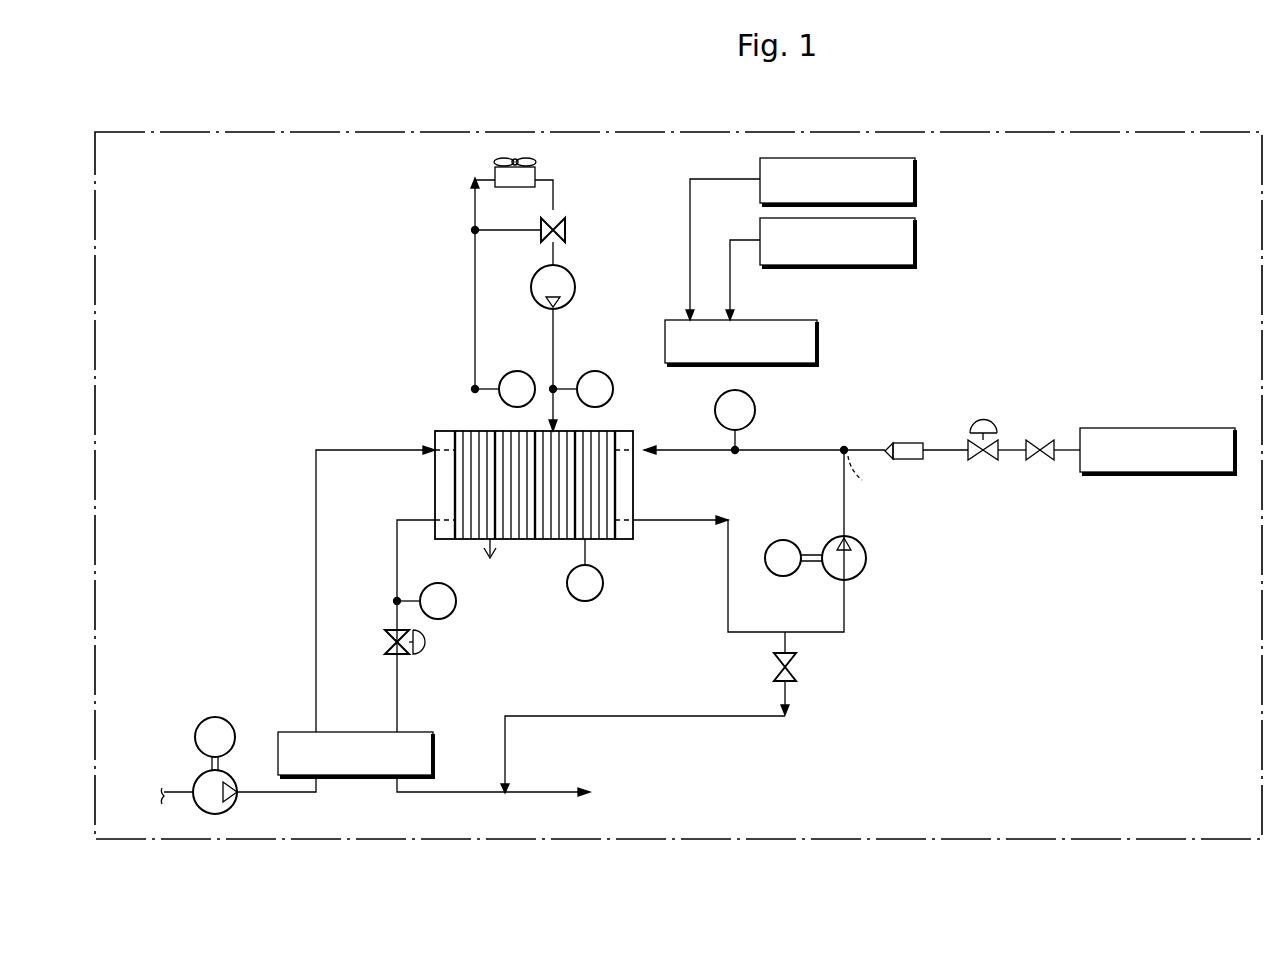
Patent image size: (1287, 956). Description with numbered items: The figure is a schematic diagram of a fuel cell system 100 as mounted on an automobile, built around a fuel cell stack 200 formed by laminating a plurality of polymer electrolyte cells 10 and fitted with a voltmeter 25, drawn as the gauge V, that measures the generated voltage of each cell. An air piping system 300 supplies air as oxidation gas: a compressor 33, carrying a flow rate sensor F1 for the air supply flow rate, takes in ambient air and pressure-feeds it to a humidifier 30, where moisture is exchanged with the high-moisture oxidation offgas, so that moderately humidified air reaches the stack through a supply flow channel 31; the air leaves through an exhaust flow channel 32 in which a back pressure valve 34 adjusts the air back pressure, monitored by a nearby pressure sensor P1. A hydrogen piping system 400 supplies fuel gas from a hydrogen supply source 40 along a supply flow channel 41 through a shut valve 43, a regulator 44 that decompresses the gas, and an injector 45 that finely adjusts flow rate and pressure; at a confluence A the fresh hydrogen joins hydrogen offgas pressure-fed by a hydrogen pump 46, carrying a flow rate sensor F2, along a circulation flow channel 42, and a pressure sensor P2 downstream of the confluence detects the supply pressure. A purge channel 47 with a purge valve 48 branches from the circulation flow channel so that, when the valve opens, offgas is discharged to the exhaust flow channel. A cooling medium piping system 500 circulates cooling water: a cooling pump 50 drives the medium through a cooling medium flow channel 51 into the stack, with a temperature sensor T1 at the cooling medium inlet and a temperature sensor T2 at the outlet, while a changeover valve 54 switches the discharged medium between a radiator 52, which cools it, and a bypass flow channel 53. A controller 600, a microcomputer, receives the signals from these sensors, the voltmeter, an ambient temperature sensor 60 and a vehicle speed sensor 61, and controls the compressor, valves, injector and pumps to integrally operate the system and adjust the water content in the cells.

The fuel cell system 100 is at (631, 131).
The polymer electrolyte cell 10 is at (490, 562).
The fuel cell stack 200 is at (551, 548).
The voltmeter 25 is at (600, 600).
The air piping system 300 is at (288, 638).
The humidifier 30 is at (436, 758).
The supply flow channel 31 is at (377, 449).
The exhaust flow channel 32 is at (398, 552).
The compressor 33 is at (230, 810).
The back pressure valve 34 is at (428, 652).
The hydrogen piping system 400 is at (930, 418).
The hydrogen supply source 40 is at (1150, 426).
The supply flow channel 41 is at (791, 449).
The circulation flow channel 42 is at (726, 595).
The shut valve 43 is at (1045, 464).
The regulator 44 is at (990, 464).
The injector 45 is at (903, 462).
The hydrogen pump 46 is at (868, 563).
The purge channel 47 is at (660, 714).
The purge valve 48 is at (800, 672).
The cooling medium piping system 500 is at (460, 285).
The cooling pump 50 is at (576, 273).
The cooling medium flow channel 51 is at (472, 209).
The radiator 52 is at (494, 172).
The bypass flow channel 53 is at (518, 234).
The changeover valve 54 is at (558, 215).
The ambient temperature sensor 60 is at (918, 182).
The vehicle speed sensor 61 is at (918, 243).
The controller 600 is at (820, 340).
The confluence A is at (863, 479).
The temperature sensor T1 is at (582, 389).
The temperature sensor T2 is at (504, 389).
The pressure sensor P1 is at (425, 601).
The pressure sensor P2 is at (735, 422).
The flow rate sensor F1 is at (215, 743).
The flow rate sensor F2 is at (793, 558).
The voltage sensor V is at (585, 570).